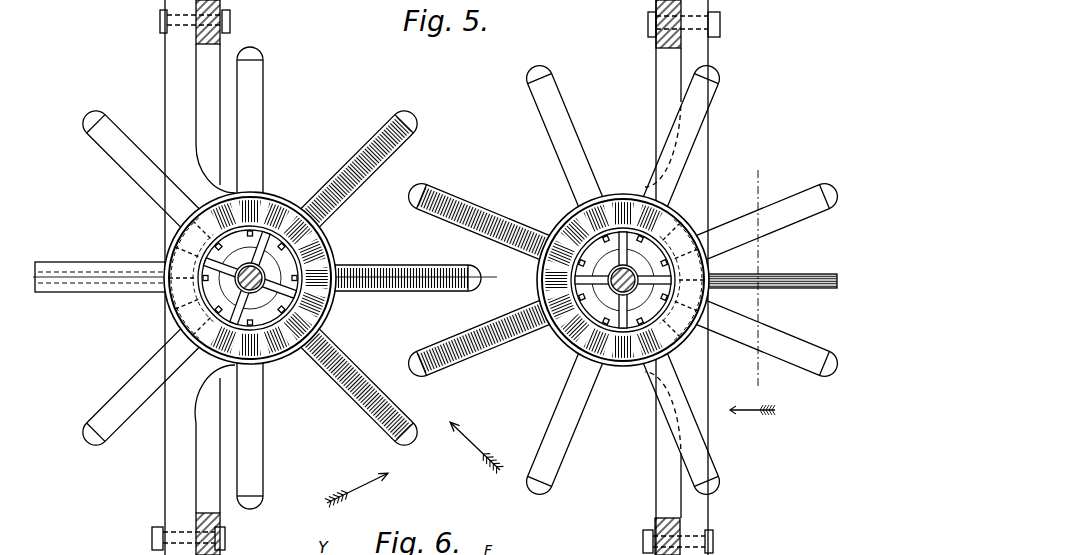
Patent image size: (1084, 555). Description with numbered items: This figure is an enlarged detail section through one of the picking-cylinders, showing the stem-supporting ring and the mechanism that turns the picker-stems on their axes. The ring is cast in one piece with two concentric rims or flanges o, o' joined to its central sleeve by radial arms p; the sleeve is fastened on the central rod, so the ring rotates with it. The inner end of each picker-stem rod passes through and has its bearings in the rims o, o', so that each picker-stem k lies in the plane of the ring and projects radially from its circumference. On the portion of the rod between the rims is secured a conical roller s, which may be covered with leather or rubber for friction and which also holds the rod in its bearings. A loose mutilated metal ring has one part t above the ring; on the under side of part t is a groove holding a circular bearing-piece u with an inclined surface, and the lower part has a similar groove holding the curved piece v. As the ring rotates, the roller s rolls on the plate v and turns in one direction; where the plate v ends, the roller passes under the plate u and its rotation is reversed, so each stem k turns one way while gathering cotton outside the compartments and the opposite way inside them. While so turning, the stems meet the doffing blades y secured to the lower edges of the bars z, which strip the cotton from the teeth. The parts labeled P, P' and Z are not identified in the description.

The supporting arm P is at (224, 277).
The second supporting arm P' is at (654, 277).
The picker-stem k is at (586, 432).
The bar Z is at (768, 292).
The doffing blade y is at (271, 281).
The bar z is at (753, 279).
The rim or flange o is at (436, 279).
The part of loose mutilated metal ring t is at (436, 279).
The rim or flange o' is at (436, 279).
The radial arm p is at (437, 279).
The curved piece v is at (437, 280).
The conical roller s is at (435, 293).
The circular piece u is at (444, 267).